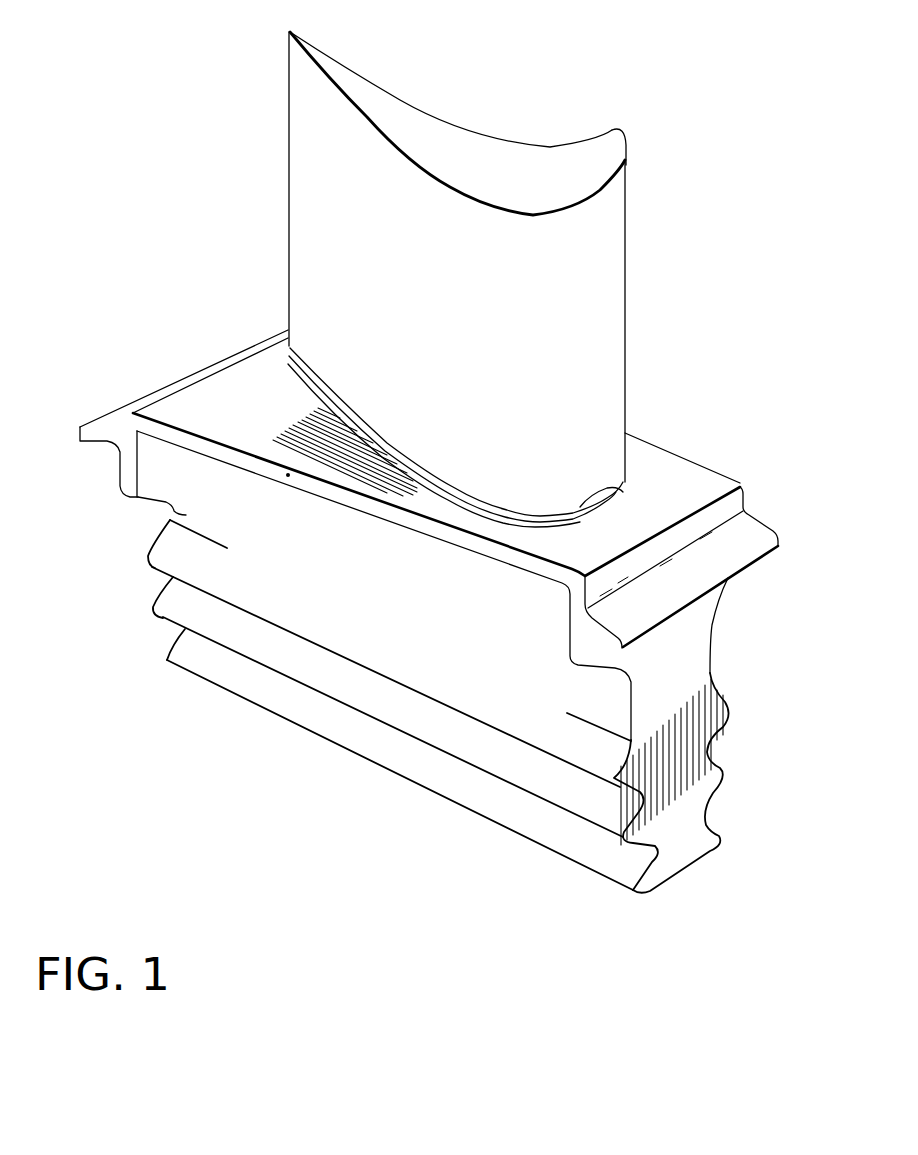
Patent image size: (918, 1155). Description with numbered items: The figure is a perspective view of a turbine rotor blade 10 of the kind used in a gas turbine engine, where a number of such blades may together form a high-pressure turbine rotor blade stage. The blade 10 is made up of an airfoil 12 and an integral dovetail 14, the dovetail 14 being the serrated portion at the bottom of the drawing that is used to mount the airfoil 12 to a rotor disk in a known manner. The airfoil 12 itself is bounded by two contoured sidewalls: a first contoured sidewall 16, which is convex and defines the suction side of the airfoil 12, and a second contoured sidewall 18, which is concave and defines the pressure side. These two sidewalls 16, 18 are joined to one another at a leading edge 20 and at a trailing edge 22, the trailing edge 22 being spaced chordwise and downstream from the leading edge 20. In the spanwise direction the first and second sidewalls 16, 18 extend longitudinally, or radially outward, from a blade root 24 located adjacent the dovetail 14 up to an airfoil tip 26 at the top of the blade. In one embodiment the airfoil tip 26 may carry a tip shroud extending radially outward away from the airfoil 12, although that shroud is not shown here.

The turbine rotor blade 10 is at (124, 195).
The airfoil 12 is at (627, 268).
The dovetail 14 is at (712, 672).
The first contoured sidewall 16 is at (333, 227).
The second contoured sidewall 18 is at (500, 135).
The leading edge 20 is at (615, 129).
The trailing edge 22 is at (289, 32).
The blade root 24 is at (620, 480).
The airfoil tip 26 is at (425, 133).